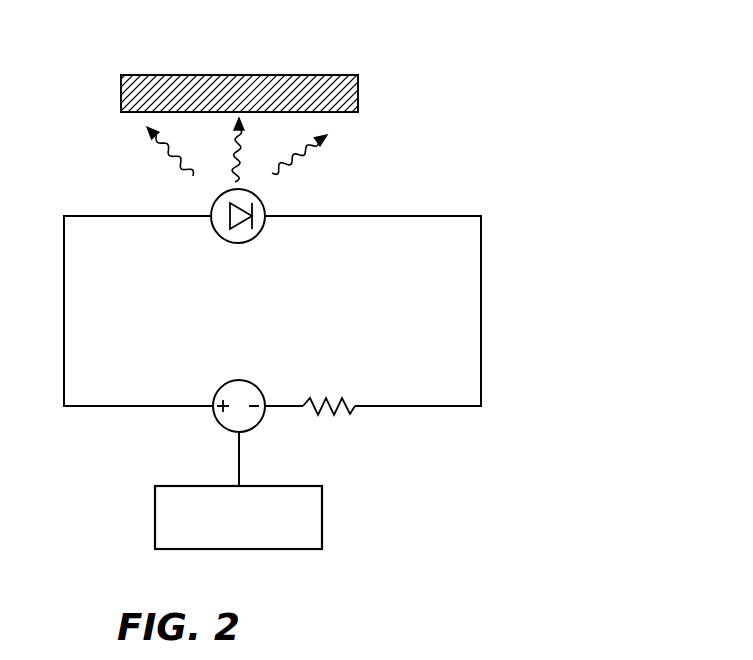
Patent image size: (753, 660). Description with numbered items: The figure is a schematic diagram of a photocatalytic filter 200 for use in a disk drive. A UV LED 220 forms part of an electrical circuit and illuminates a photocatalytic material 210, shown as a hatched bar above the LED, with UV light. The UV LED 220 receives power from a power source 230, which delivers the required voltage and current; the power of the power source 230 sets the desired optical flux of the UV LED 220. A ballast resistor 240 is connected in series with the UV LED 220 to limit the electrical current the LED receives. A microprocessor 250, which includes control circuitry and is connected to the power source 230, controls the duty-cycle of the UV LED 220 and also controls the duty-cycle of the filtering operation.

The photocatalytic filter 200 is at (540, 127).
The photocatalytic material 210 is at (358, 87).
The UV LED 220 is at (258, 232).
The power source 230 is at (257, 385).
The ballast resistor 240 is at (352, 406).
The microprocessor 250 is at (322, 503).